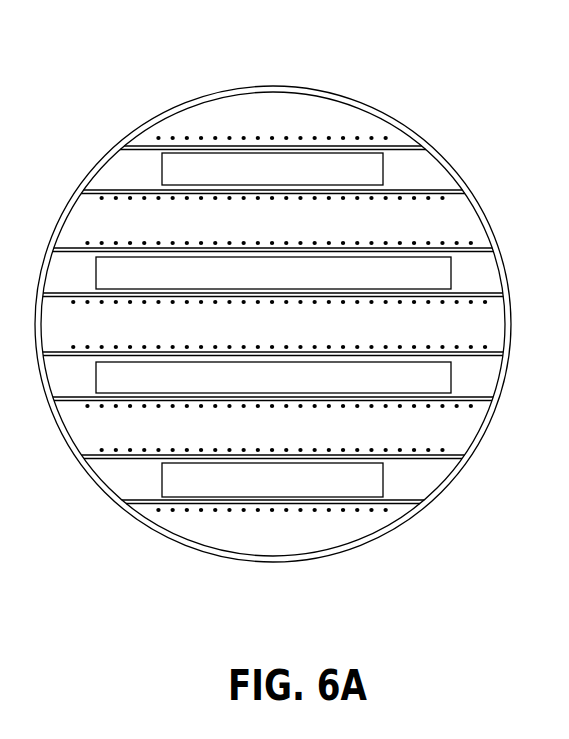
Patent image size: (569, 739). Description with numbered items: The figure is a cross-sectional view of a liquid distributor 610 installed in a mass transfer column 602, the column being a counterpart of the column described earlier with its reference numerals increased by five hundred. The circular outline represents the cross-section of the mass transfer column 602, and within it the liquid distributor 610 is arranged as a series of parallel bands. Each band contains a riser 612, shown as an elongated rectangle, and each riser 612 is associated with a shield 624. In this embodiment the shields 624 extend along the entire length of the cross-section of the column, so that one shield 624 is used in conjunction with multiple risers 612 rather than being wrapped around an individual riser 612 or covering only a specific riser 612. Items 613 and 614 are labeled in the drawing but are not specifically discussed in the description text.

The mass transfer column 602 is at (308, 88).
The liquid distributor 610 is at (263, 110).
The riser 612 is at (320, 263).
The die edge 613 is at (385, 168).
The alignment marks 614 is at (173, 138).
The shield 624 is at (378, 142).